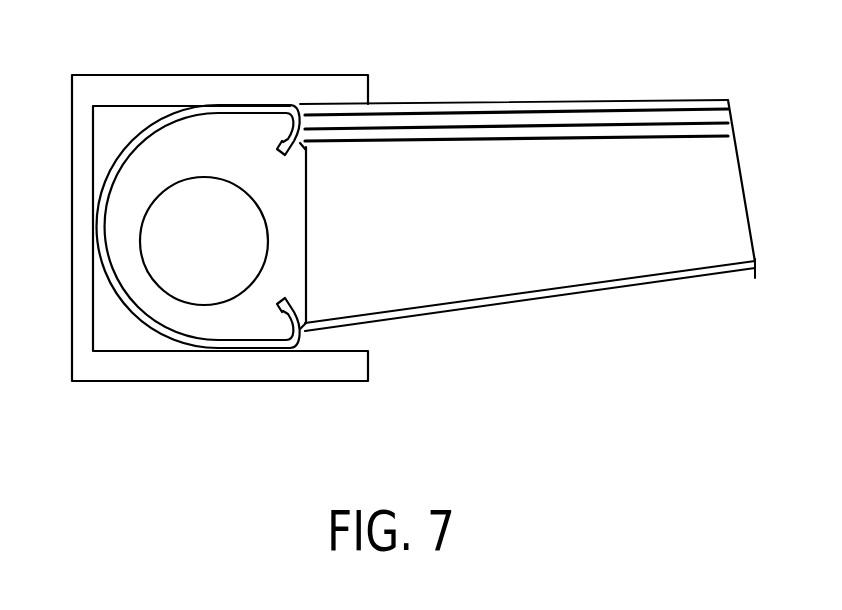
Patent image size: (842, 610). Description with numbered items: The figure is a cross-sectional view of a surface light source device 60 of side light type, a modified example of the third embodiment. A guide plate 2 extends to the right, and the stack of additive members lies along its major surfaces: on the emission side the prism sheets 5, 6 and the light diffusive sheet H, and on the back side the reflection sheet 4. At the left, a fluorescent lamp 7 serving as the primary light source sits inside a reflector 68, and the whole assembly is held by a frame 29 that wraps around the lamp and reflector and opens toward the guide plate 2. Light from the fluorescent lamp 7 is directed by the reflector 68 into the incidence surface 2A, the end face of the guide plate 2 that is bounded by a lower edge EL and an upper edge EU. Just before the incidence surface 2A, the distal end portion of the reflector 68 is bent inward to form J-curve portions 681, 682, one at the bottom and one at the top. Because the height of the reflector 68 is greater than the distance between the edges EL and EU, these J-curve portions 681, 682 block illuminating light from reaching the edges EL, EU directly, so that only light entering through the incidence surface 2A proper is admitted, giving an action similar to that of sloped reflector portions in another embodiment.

The guide plate 2 is at (690, 263).
The incidence surface 2A is at (306, 200).
The reflection sheet 4 is at (572, 296).
The prism sheet 5 is at (548, 113).
The prism sheet 6 is at (474, 103).
The fluorescent lamp 7 is at (205, 298).
The frame 29 is at (330, 366).
The surface light source device 60 is at (190, 444).
The reflector 68 is at (152, 136).
The J-curve portion 681 is at (303, 341).
The J-curve portion 682 is at (292, 108).
The lower edge EL is at (307, 326).
The upper edge EU is at (305, 145).
The light diffusive sheet H is at (667, 124).